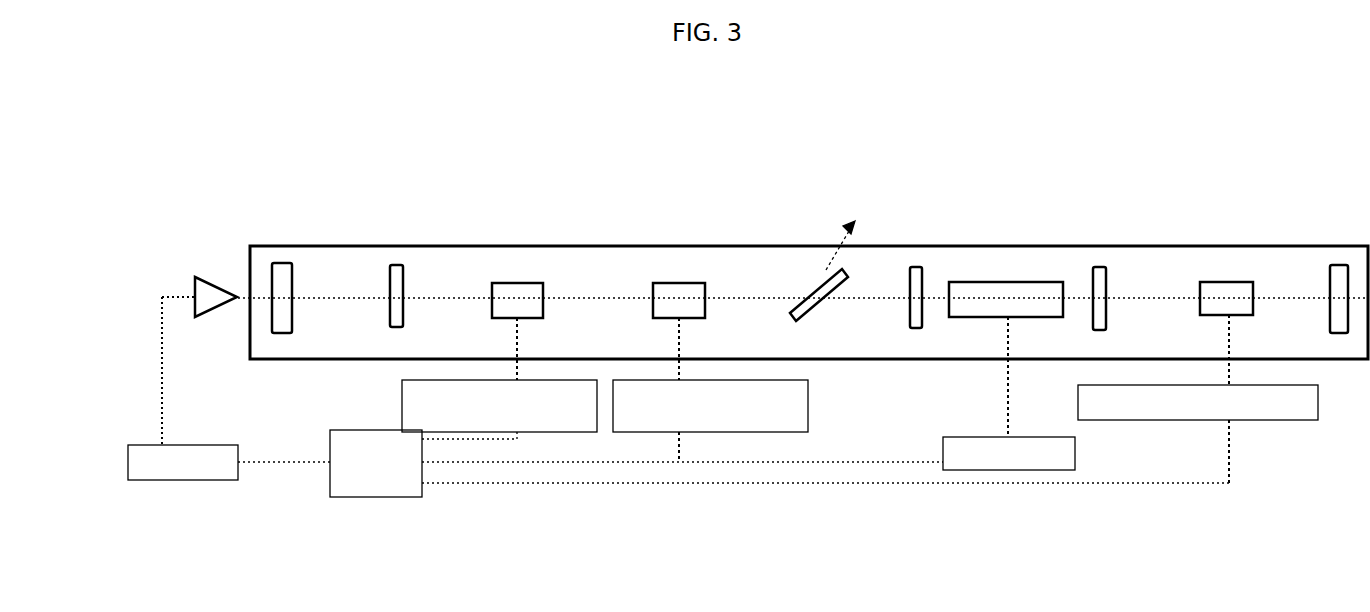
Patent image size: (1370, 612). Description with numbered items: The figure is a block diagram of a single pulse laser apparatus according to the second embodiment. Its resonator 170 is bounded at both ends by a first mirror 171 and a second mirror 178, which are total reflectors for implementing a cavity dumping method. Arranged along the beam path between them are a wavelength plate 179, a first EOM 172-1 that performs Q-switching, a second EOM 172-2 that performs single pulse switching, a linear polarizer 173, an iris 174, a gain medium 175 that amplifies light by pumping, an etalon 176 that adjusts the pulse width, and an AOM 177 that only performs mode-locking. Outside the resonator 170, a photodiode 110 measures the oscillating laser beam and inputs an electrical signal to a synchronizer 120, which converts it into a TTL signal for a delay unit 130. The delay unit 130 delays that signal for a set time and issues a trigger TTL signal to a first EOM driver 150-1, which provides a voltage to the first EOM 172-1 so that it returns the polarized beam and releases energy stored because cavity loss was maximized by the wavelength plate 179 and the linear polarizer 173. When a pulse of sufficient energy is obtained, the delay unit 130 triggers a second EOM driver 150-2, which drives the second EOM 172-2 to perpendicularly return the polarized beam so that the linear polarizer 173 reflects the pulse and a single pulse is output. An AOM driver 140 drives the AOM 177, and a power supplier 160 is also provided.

The photodiode 110 is at (207, 312).
The synchronizer 120 is at (178, 482).
The delay unit 130 is at (382, 499).
The AOM driver 140 is at (1258, 423).
The first EOM driver 150-1 is at (401, 402).
The second EOM driver 150-2 is at (809, 400).
The power supplier 160 is at (1008, 472).
The resonator 170 is at (1348, 361).
The first mirror 171 is at (282, 262).
The first EOM 172-1 is at (517, 282).
The second EOM 172-2 is at (678, 282).
The linear polarizer 173 is at (822, 282).
The iris 174 is at (915, 266).
The gain medium 175 is at (1003, 281).
The etalon 176 is at (1098, 266).
The AOM 177 is at (1218, 281).
The second mirror 178 is at (1332, 264).
The wavelength plate 179 is at (398, 263).